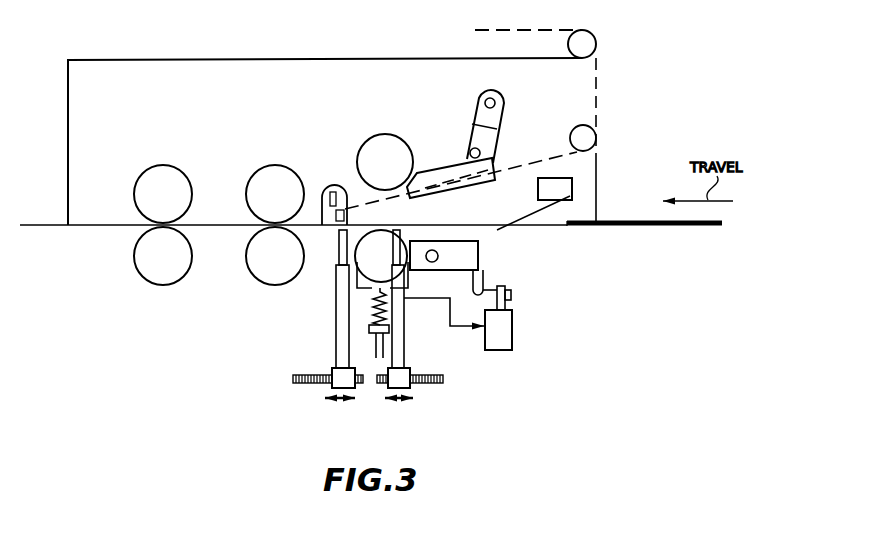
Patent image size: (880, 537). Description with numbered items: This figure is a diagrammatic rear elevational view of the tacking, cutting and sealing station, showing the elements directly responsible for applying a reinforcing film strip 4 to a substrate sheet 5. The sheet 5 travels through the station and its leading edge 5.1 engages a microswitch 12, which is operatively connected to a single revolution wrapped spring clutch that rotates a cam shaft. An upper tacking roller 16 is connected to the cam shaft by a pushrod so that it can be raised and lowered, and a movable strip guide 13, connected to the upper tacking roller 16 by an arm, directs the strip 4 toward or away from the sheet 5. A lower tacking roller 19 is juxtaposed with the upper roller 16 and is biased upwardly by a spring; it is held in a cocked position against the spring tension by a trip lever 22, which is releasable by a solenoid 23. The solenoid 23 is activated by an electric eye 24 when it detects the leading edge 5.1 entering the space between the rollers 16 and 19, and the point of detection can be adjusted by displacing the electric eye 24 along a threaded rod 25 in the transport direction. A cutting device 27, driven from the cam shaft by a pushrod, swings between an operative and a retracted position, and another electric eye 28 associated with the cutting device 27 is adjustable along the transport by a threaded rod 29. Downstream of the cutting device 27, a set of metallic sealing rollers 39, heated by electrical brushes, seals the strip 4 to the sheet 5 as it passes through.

The strip 4 is at (596, 60).
The metallic sealing rollers 39 is at (248, 176).
The upper tacking roller 16 is at (394, 134).
The cutting device 27 is at (332, 183).
The movable strip guide 13 is at (498, 163).
The microswitch 12 is at (575, 181).
The sheet 5 is at (655, 229).
The leading edge 5.1 is at (566, 227).
The lower tacking roller 19 is at (353, 267).
The electric eye 28 is at (335, 307).
The electric eye 24 is at (405, 316).
The trip lever 22 is at (489, 278).
The solenoid 23 is at (515, 325).
The threaded rod 29 is at (307, 384).
The threaded rod 25 is at (446, 386).